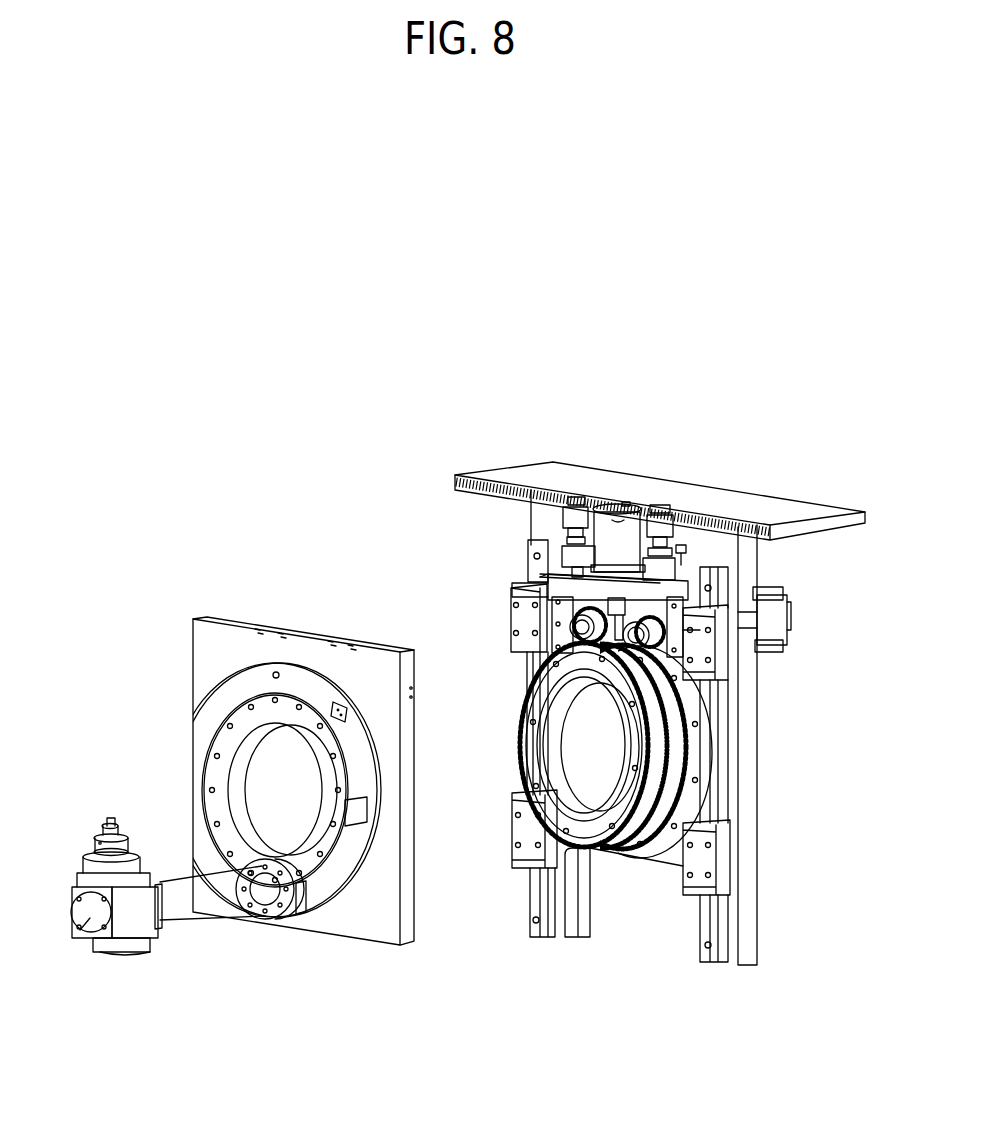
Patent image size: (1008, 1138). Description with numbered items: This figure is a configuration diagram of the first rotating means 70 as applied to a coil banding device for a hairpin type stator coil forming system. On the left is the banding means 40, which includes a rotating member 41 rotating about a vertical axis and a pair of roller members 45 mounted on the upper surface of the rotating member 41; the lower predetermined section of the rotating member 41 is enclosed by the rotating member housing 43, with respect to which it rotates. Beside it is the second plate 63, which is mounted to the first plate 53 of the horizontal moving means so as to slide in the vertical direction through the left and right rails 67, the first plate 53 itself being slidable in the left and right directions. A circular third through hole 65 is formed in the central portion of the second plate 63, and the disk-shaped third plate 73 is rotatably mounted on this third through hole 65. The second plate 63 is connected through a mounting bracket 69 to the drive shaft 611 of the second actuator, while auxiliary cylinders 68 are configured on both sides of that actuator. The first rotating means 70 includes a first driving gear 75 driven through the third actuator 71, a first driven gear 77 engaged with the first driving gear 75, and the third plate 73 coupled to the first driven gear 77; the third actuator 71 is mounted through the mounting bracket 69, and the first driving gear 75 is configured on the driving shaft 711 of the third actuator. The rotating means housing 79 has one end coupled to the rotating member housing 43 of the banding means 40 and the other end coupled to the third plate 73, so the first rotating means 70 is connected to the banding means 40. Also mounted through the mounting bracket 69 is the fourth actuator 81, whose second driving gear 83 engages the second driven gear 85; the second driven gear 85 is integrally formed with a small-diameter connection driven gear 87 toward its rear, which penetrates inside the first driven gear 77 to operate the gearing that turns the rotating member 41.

The banding means 40 is at (127, 968).
The rotating member 41 is at (92, 860).
The rotating member housing 43 is at (78, 940).
The roller members 45 is at (118, 826).
The first plate 53 is at (723, 553).
The second plate 63 is at (365, 660).
The third through hole 65 is at (353, 809).
The left and right rails 67 is at (703, 957).
The auxiliary cylinders 68 is at (570, 522).
The mounting bracket 69 is at (673, 597).
The first rotating means 70 is at (247, 462).
The third actuator 71 is at (687, 582).
The third plate 73 is at (440, 752).
The first driving gear 75 is at (573, 623).
The first driven gear 77 is at (560, 647).
The rotating means housing 79 is at (190, 908).
The fourth actuator 81 is at (770, 615).
The second driving gear 83 is at (680, 620).
The second driven gear 85 is at (707, 680).
The connection driven gear 87 is at (647, 743).
The drive shaft of the second actuator 611 is at (613, 508).
The driving shaft of the third actuator 711 is at (562, 598).